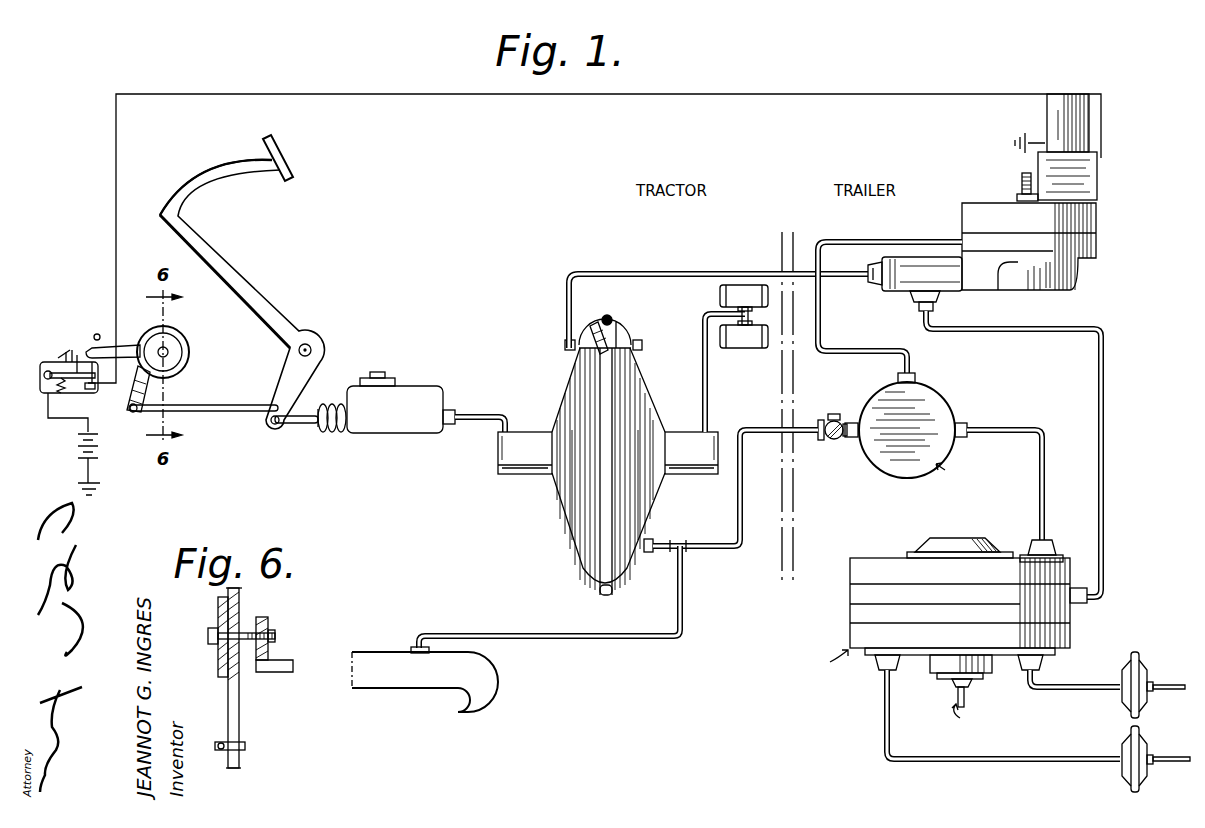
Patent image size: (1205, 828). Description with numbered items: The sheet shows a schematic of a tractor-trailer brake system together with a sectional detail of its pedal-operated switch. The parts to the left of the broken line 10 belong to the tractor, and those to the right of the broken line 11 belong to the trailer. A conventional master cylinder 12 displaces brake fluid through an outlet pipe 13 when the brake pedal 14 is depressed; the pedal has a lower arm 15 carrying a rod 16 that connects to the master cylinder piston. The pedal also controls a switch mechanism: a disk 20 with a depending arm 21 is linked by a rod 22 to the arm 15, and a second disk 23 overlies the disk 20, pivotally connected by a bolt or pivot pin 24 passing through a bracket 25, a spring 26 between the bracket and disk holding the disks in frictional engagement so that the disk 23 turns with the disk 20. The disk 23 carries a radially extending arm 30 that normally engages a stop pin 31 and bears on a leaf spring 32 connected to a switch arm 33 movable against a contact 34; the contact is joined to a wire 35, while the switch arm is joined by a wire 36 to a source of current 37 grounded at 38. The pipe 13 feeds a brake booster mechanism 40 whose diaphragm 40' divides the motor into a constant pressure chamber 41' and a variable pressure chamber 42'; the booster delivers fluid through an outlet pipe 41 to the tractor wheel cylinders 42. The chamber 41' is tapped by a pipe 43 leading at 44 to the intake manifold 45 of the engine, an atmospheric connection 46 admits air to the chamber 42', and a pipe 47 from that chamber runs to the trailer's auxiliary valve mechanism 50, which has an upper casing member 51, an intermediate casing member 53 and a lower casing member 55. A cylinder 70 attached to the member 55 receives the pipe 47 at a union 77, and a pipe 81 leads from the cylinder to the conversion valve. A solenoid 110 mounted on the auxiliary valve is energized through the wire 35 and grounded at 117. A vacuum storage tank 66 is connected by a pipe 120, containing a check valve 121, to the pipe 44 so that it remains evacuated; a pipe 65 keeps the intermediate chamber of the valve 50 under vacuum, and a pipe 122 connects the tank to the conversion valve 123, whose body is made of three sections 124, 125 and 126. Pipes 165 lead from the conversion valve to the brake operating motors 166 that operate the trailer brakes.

In FIG. 1, the broken line 10 is at (780, 245).
In FIG. 1, the broken line 11 is at (796, 256).
In FIG. 1, the master cylinder 12 is at (412, 388).
In FIG. 1, the outlet pipe 13 is at (478, 410).
In FIG. 1, the brake pedal 14 is at (288, 321).
In FIG. 1, the lower arm 15 is at (286, 382).
In FIG. 1, the rod 16 is at (292, 423).
In FIG. 1, the disk 20 is at (186, 338).
In FIG. 6, the disk 20 is at (240, 592).
In FIG. 1, the depending arm 21 is at (148, 392).
In FIG. 6, the depending arm 21 is at (240, 712).
In FIG. 1, the rod 22 is at (212, 404).
In FIG. 6, the rod 22 is at (220, 744).
In FIG. 1, the second disk 23 is at (150, 342).
In FIG. 6, the second disk 23 is at (218, 605).
In FIG. 1, the pivot pin 24 is at (170, 353).
In FIG. 6, the pivot pin 24 is at (208, 636).
In FIG. 6, the bracket 25 is at (284, 662).
In FIG. 6, the spring 26 is at (250, 632).
In FIG. 1, the radially extending arm 30 is at (76, 347).
In FIG. 1, the stop pin 31 is at (97, 334).
In FIG. 1, the leaf spring 32 is at (60, 356).
In FIG. 1, the switch arm 33 is at (62, 393).
In FIG. 1, the contact 34 is at (92, 390).
In FIG. 1, the wire 35 is at (116, 220).
In FIG. 1, the wire 36 is at (48, 398).
In FIG. 1, the source of current 37 is at (100, 446).
In FIG. 1, the ground 38 is at (100, 491).
In FIG. 1, the brake booster mechanism 40 is at (608, 471).
In FIG. 1, the diaphragm 40' is at (550, 351).
In FIG. 1, the outlet pipe 41 is at (708, 373).
In FIG. 1, the constant pressure chamber 41' is at (614, 319).
In FIG. 1, the tractor wheel cylinders 42 is at (723, 328).
In FIG. 1, the variable pressure chamber 42' is at (591, 322).
In FIG. 1, the pipe 43 is at (650, 553).
In FIG. 1, the pipe 44 is at (622, 633).
In FIG. 1, the intake manifold 45 is at (420, 688).
In FIG. 1, the atmospheric connection 46 is at (640, 344).
In FIG. 1, the pipe 47 is at (622, 270).
In FIG. 1, the auxiliary valve mechanism 50 is at (964, 200).
In FIG. 1, the upper casing member 51 is at (988, 210).
In FIG. 1, the intermediate casing member 53 is at (1098, 228).
In FIG. 1, the lower casing member 55 is at (1080, 272).
In FIG. 1, the pipe 65 is at (850, 351).
In FIG. 1, the vacuum storage tank 66 is at (950, 396).
In FIG. 1, the cylinder 70 is at (896, 292).
In FIG. 1, the union 77 is at (876, 285).
In FIG. 1, the pipe 81 is at (1010, 330).
In FIG. 1, the solenoid 110 is at (1047, 103).
In FIG. 1, the ground 117 is at (1015, 142).
In FIG. 1, the pipe 120 is at (740, 516).
In FIG. 1, the check valve 121 is at (838, 418).
In FIG. 1, the pipe 122 is at (1002, 426).
In FIG. 1, the conversion valve 123 is at (870, 552).
In FIG. 1, the body section 124 is at (852, 576).
In FIG. 1, the body section 125 is at (852, 604).
In FIG. 1, the body section 126 is at (852, 632).
In FIG. 1, the pipes 165 is at (886, 712).
In FIG. 1, the brake operating motors 166 is at (1135, 652).